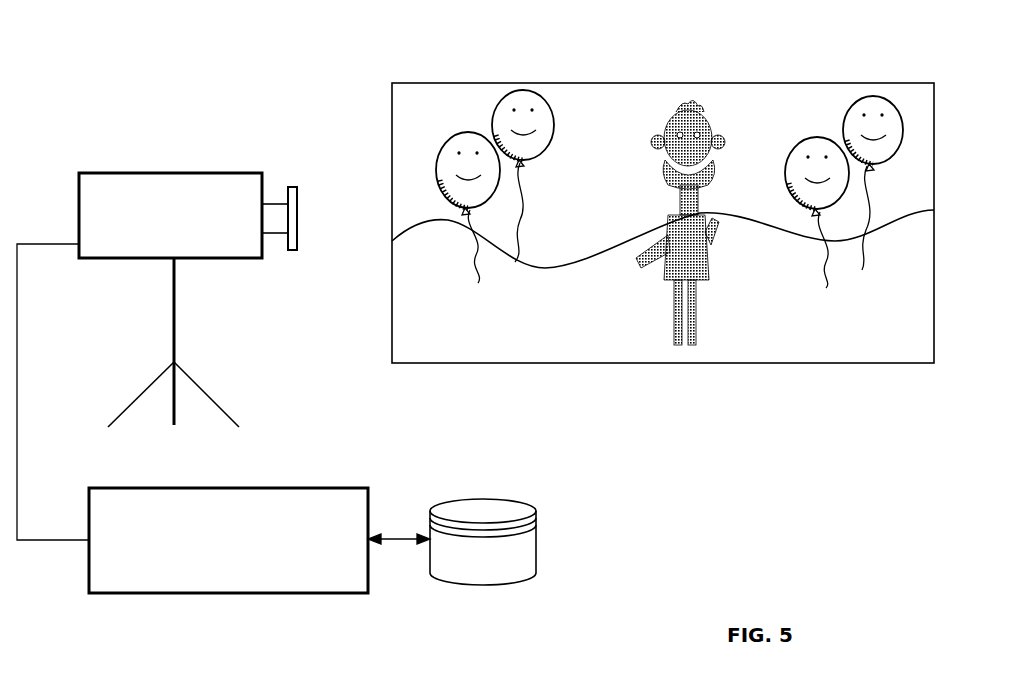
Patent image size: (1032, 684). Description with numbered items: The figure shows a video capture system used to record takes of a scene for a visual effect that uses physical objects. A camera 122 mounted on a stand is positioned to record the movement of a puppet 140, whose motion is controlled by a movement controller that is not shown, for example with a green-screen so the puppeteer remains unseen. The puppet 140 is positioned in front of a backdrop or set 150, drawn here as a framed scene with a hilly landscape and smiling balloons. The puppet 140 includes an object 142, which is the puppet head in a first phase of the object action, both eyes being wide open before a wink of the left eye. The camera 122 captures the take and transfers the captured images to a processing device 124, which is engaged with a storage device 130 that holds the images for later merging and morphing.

The camera 122 is at (79, 205).
The processing device 124 is at (296, 488).
The storage device 130 is at (536, 540).
The puppet 140 is at (698, 312).
The object 142 is at (658, 115).
The backdrop or set 150 is at (392, 133).